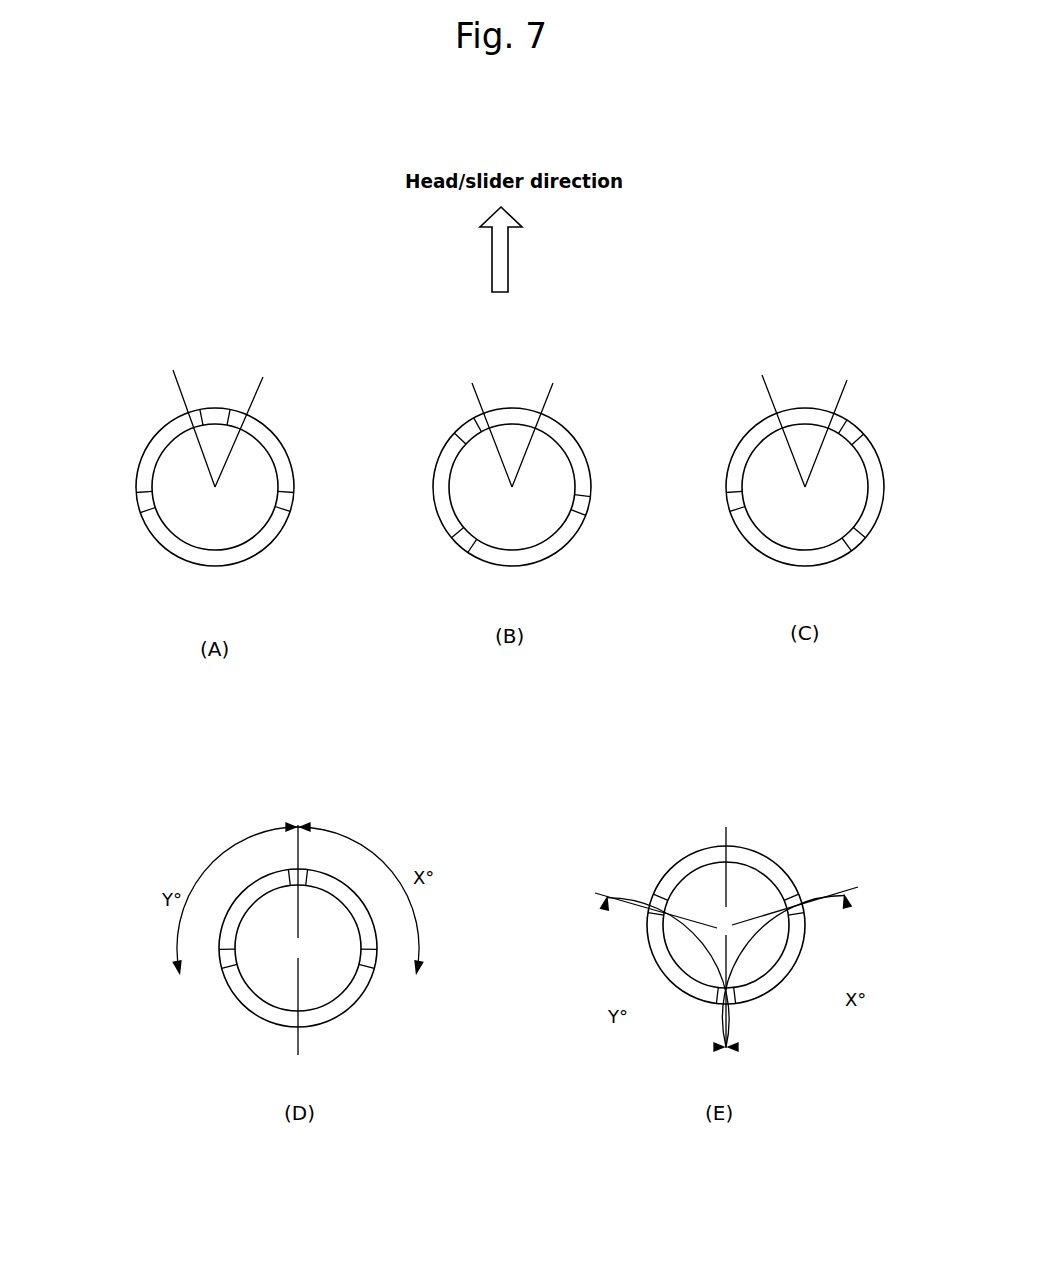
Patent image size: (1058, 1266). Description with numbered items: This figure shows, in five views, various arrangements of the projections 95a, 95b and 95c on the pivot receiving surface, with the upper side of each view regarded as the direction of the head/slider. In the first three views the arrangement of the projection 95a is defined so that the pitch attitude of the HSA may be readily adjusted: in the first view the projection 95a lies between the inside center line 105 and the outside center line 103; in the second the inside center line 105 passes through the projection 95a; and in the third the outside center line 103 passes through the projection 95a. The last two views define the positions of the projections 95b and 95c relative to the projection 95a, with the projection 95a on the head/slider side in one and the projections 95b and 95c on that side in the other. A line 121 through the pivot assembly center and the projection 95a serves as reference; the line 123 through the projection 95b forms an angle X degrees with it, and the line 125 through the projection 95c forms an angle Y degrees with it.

The projection 95a is at (218, 408).
The projection 95b is at (293, 503).
The projection 95c is at (140, 510).
The outside center line 103 is at (258, 388).
The inside center line 105 is at (179, 387).
The line 121 is at (302, 1040).
The line 123 is at (418, 978).
The line 125 is at (178, 978).